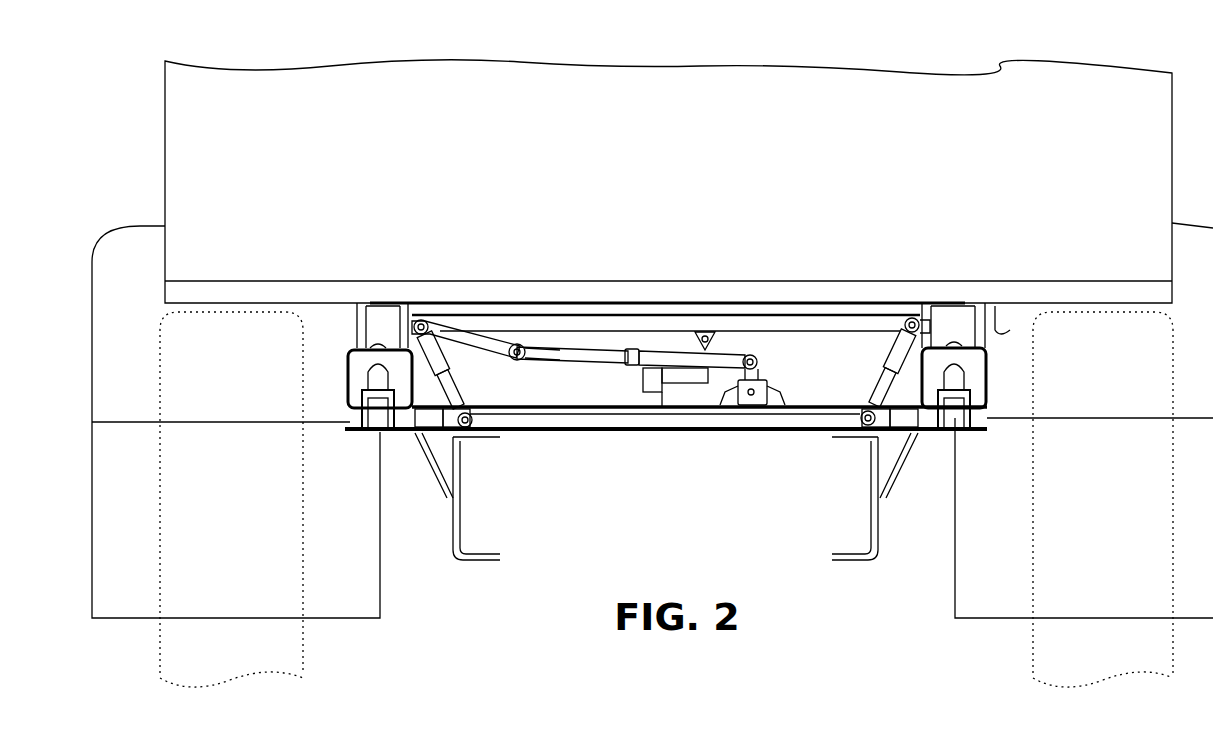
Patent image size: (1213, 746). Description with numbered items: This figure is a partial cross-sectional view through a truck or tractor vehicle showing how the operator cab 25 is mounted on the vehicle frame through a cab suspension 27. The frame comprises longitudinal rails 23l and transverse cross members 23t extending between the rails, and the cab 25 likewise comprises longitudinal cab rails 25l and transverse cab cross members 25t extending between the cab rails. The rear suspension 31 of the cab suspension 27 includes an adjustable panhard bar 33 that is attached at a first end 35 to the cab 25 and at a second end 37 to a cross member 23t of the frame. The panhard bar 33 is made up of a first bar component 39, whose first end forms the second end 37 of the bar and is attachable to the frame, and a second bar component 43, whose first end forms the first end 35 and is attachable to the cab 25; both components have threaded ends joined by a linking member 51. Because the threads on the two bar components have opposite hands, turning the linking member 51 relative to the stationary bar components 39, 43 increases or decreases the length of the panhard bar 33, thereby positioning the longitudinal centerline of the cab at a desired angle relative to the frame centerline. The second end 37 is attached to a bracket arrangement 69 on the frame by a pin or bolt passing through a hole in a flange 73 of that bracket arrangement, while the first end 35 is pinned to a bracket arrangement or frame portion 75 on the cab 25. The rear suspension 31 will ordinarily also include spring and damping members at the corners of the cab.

The operator cab 25 is at (426, 95).
The cab cross members 25t is at (605, 330).
The cab rails 25l is at (990, 332).
The cab suspension 27 is at (1055, 362).
The rear suspension 31 is at (348, 376).
The cross members 23t is at (583, 433).
The rails 23l is at (462, 527).
The adjustable panhard bar 33 is at (613, 367).
The first end 35 is at (517, 344).
The second end 37 is at (753, 356).
The first bar component 39 is at (727, 357).
The second bar component 43 is at (535, 345).
The linking member 51 is at (628, 348).
The bracket arrangement 69 is at (782, 386).
The flange 73 is at (770, 362).
The bracket arrangement or frame portion 75 is at (497, 343).